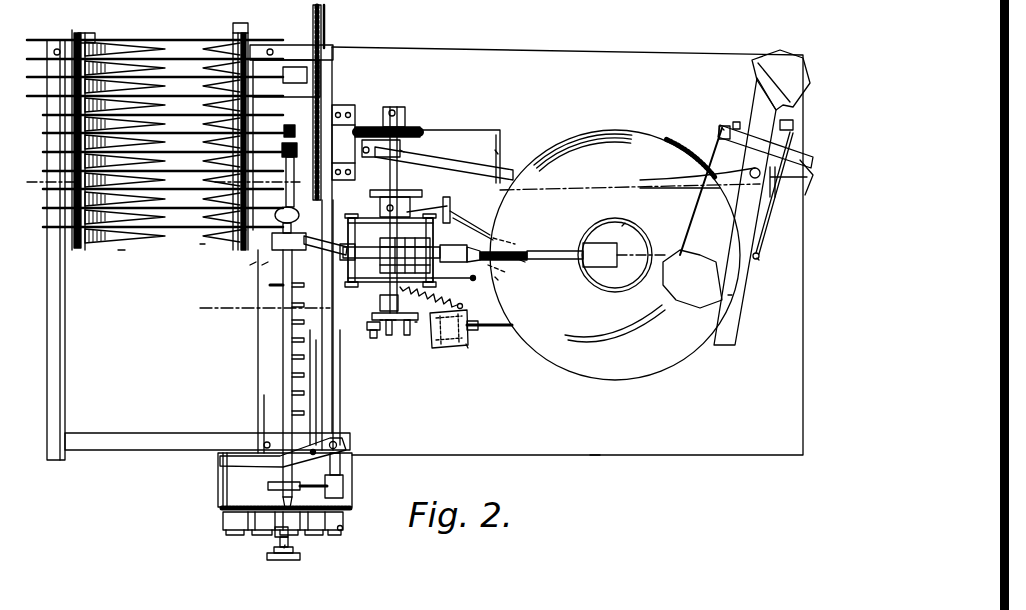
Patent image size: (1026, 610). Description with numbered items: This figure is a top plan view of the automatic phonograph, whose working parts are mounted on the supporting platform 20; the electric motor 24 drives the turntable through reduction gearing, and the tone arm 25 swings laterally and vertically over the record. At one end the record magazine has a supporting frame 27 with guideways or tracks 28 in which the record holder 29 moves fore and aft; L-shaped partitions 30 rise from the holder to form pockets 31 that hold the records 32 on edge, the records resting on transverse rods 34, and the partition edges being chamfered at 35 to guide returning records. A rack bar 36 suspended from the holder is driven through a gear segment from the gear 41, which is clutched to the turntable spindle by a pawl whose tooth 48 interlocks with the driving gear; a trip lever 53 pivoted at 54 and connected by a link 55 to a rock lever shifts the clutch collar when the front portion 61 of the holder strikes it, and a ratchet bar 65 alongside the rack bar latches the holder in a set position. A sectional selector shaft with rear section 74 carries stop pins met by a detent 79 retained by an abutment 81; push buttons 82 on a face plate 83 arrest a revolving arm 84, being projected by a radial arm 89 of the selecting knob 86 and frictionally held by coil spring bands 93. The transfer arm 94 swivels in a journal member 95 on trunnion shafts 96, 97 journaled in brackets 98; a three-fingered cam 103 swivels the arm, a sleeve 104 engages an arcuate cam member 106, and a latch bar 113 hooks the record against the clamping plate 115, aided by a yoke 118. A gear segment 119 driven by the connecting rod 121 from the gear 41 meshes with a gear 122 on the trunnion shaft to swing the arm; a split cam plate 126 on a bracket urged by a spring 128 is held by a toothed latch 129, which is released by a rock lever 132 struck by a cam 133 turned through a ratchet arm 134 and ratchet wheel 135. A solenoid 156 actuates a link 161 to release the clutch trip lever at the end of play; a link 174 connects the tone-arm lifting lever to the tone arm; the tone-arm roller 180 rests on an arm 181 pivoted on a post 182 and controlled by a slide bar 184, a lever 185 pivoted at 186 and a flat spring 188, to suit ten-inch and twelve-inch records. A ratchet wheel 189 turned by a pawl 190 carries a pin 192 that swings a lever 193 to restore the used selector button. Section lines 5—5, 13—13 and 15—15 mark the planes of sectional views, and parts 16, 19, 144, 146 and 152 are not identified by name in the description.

The section line 5 is at (745, 360).
The section line 13 is at (283, 358).
The section line 15 is at (302, 140).
The spool post 16 is at (240, 230).
The rod 19 is at (256, 293).
The supporting platform 20 is at (597, 434).
The electric motor 24 is at (150, 440).
The tone arm 25 is at (732, 295).
The supporting frame 27 is at (290, 46).
The guideways or tracks 28 is at (62, 385).
The record holder 29 is at (82, 250).
The division plates or partitions 30 is at (150, 50).
The pockets 31 is at (110, 62).
The records 32 is at (48, 150).
The transverse rods 34 is at (299, 215).
The chamfered edges 35 is at (118, 250).
The rack bar 36 is at (312, 25).
The gear 41 is at (675, 140).
The tooth 48 is at (292, 322).
The trip or actuating lever 53 is at (222, 472).
The pivot 54 is at (342, 442).
The link 55 is at (335, 372).
The front portion of the holder 61 is at (250, 265).
The ratchet bar 65 is at (326, 28).
The rear shaft section 74 is at (200, 244).
The detent 79 is at (262, 265).
The abutment 81 is at (284, 548).
The push buttons 82 is at (335, 532).
The face plate 83 is at (220, 510).
The revolving arm 84 is at (345, 522).
The selecting knob 86 is at (300, 558).
The radial arm 89 is at (275, 535).
The coil spring bands 93 is at (225, 520).
The transfer arm 94 is at (553, 251).
The journal member 95 is at (445, 248).
The trunnion shaft 96 is at (400, 150).
The trunnion shaft 97 is at (393, 320).
The brackets 98 is at (398, 112).
The three-fingered cam 103 is at (378, 280).
The sleeve 104 is at (354, 337).
The arcuate cam member 106 is at (346, 252).
The latch bar 113 is at (525, 262).
The record-clamping plate 115 is at (625, 223).
The yoke 118 is at (498, 280).
The gear segment 119 is at (370, 126).
The pitman or connecting rod 121 is at (513, 168).
The gear 122 is at (410, 128).
The cam plate 126 is at (445, 290).
The spring 128 is at (462, 346).
The toothed latch 129 is at (452, 210).
The rock lever 132 is at (495, 150).
The cam 133 is at (372, 194).
The ratchet arm 134 is at (400, 150).
The ratchet wheel 135 is at (490, 130).
The bar 144 is at (725, 150).
The link 146 is at (722, 128).
The dashed link 152 is at (508, 240).
The solenoid 156 is at (468, 348).
The link 161 is at (510, 328).
The link 174 is at (760, 125).
The abutment or roller 180 is at (690, 178).
The vertically-swinging arm 181 is at (798, 197).
The post 182 is at (774, 199).
The slide bar 184 is at (759, 260).
The vertically-swinging lever 185 is at (740, 231).
The pivot 186 is at (778, 103).
The flat spring 188 is at (630, 178).
The ratchet wheel 189 is at (380, 320).
The pawl 190 is at (415, 322).
The pin 192 is at (408, 320).
The vertically swinging lever 193 is at (385, 320).